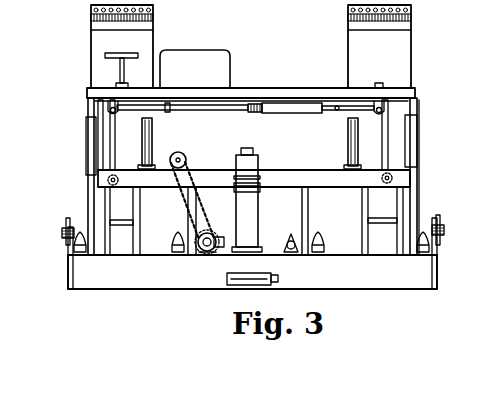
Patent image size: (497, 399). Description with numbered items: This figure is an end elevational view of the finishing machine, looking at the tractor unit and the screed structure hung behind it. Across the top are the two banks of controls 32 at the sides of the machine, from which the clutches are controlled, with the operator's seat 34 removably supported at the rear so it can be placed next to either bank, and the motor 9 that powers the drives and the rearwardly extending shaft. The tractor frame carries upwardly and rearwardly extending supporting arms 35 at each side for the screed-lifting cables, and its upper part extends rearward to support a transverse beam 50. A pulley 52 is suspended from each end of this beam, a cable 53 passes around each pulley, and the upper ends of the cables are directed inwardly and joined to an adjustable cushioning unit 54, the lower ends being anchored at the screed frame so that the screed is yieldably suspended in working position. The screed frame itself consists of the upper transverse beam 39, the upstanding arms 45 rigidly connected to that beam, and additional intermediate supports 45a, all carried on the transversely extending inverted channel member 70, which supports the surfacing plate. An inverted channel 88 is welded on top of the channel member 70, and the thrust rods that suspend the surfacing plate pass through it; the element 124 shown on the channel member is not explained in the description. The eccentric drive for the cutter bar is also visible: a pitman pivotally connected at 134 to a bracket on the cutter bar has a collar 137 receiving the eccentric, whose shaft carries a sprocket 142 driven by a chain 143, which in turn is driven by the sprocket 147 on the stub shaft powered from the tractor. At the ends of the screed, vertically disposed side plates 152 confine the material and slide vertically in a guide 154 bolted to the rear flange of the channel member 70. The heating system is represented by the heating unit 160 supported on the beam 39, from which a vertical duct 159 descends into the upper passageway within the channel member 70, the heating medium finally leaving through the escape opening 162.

The motor 9 is at (193, 58).
The bank of controls 32 is at (153, 22).
The operator's seat 34 is at (138, 53).
The supporting arms 35 is at (153, 133).
The upper transverse beam 39 is at (303, 178).
The upstanding arms 45 is at (106, 216).
The intermediate supports 45a is at (312, 220).
The transverse beam 50 is at (410, 92).
The pulley 52 is at (115, 113).
The cable 53 is at (112, 155).
The adjustable cushioning unit 54 is at (287, 118).
The inverted channel member 70 is at (428, 268).
The inverted channel 88 is at (325, 246).
The mounting nut 124 is at (172, 244).
The pivotal connection 134 is at (290, 240).
The collar 137 is at (211, 232).
The sprocket 142 is at (203, 255).
The chain 143 is at (180, 218).
The sprocket 147 is at (186, 157).
The side plates 152 is at (68, 259).
The guide 154 is at (62, 238).
The vertical duct 159 is at (252, 214).
The heating unit 160 is at (258, 192).
The escape opening 162 is at (232, 284).